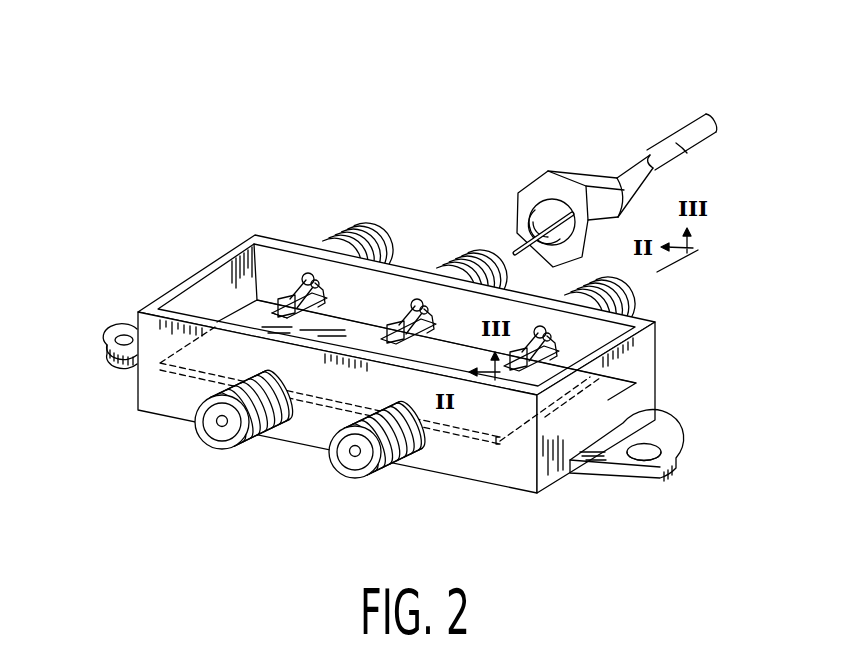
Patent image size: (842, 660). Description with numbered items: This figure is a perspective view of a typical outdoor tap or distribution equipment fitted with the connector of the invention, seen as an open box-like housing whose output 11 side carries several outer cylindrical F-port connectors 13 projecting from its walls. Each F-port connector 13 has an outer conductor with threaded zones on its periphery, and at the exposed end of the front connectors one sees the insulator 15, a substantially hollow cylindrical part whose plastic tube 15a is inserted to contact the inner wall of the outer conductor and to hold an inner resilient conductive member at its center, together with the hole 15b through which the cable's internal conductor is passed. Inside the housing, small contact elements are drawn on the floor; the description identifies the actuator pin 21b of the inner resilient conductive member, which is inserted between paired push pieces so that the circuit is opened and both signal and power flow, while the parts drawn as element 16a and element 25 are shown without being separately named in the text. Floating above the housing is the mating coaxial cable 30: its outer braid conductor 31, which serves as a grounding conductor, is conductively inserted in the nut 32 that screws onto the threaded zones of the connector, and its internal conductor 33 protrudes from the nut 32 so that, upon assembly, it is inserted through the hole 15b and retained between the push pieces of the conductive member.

The output 11 is at (640, 396).
The F-port connector 13 is at (372, 227).
The insulator 15 is at (200, 430).
The plastic tube 15a is at (203, 402).
The hole 15b is at (222, 428).
The contact element 16a is at (303, 270).
The actuator pin 21b is at (283, 297).
The insulating substrate 25 is at (245, 310).
The coaxial cable 30 is at (595, 122).
The outer braid conductor 31 is at (673, 140).
The nut 32 is at (555, 177).
The internal conductor 33 is at (513, 250).